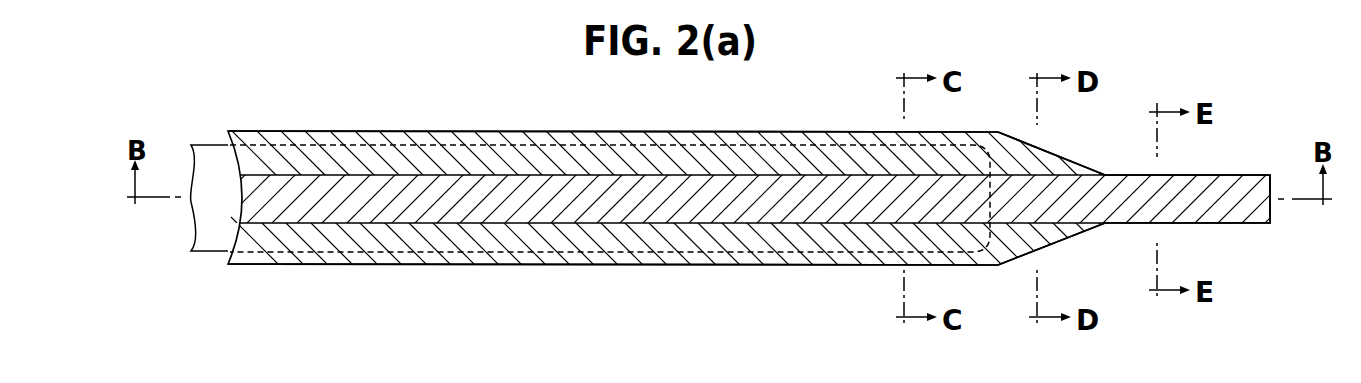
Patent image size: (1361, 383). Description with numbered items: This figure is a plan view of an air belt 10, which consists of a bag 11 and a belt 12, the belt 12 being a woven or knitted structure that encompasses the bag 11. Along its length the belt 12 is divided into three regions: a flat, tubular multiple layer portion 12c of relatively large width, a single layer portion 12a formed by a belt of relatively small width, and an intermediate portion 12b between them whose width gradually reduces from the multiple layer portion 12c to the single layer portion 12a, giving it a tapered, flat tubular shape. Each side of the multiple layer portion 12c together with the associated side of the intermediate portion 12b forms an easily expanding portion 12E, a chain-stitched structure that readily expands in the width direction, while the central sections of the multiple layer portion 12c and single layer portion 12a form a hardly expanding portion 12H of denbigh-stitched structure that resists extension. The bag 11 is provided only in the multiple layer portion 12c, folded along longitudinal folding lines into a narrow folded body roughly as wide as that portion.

The air belt 10 is at (432, 124).
The bag 11 is at (605, 257).
The belt 12 is at (372, 230).
The easily expanding portion 12E is at (362, 148).
The hardly expanding portion 12H is at (852, 193).
The single layer portion 12a is at (1143, 225).
The intermediate portion 12b is at (1045, 253).
The multiple layer portion 12c is at (820, 267).